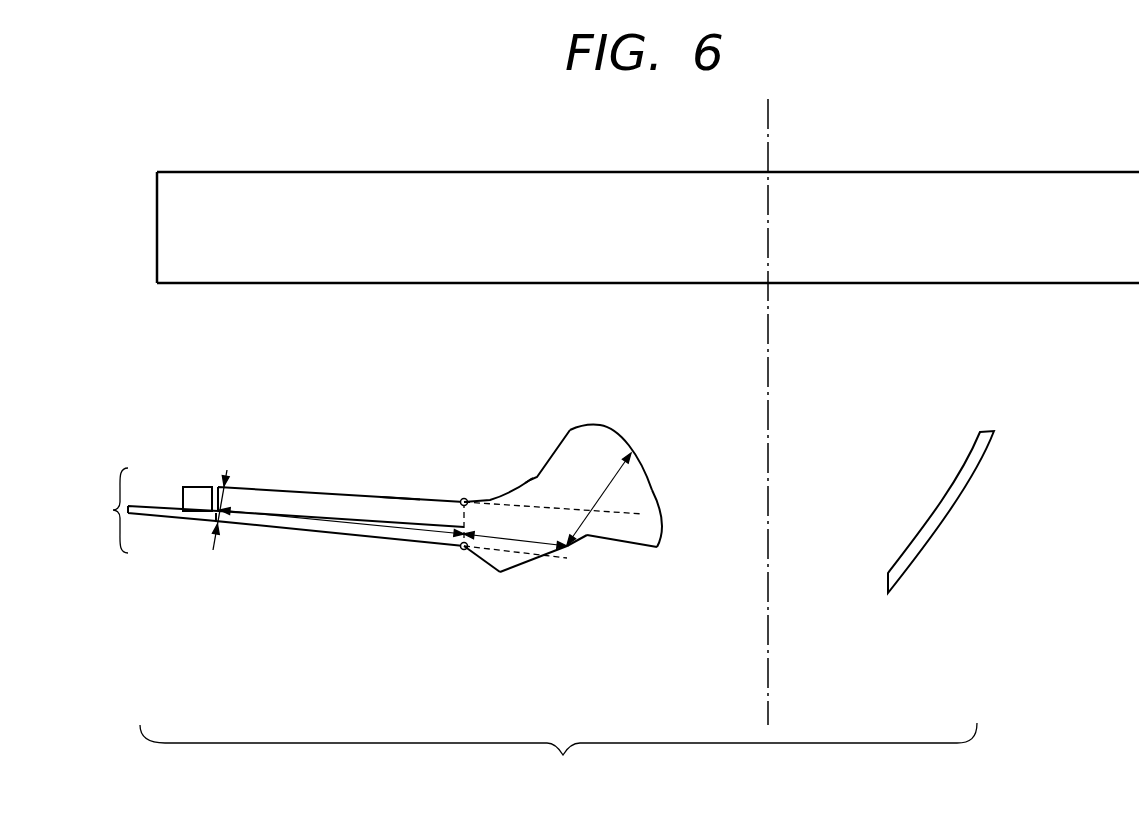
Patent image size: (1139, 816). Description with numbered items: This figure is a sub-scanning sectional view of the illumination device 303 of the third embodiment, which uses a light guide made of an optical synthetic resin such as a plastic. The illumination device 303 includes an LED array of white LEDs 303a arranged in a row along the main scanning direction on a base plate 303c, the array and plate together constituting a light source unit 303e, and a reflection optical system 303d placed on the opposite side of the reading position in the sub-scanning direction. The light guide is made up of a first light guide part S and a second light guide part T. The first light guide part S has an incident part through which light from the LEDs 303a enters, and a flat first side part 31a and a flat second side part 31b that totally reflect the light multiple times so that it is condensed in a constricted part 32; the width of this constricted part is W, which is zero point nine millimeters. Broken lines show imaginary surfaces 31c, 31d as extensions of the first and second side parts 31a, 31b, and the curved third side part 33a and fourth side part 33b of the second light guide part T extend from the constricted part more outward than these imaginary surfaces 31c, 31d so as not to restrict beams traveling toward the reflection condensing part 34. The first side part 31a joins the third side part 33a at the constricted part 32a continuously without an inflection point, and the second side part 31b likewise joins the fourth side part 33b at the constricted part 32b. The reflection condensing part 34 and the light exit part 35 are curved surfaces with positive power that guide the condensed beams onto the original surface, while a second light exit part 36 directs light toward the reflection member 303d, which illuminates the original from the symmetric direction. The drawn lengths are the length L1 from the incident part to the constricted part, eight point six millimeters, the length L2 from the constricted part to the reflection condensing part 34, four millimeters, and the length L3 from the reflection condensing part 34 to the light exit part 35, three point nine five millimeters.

The illumination device 303 is at (558, 755).
The white LED 303a is at (197, 496).
The base plate 303c is at (180, 520).
The reflection optical system 303d is at (975, 458).
The light source unit 303e is at (92, 510).
The first side part 31a is at (330, 490).
The second side part 31b is at (325, 531).
The imaginary surface 31c is at (625, 515).
The imaginary surface 31d is at (557, 560).
The constricted part 32 is at (453, 494).
The constricted part 32a is at (464, 498).
The constricted part 32b is at (462, 550).
The third side part 33a is at (492, 500).
The fourth side part 33b is at (482, 560).
The reflection condensing part 34 is at (585, 550).
The light exit part 35 is at (628, 442).
The second light exit part 36 is at (625, 538).
The first light guide part S is at (400, 490).
The second light guide part T is at (533, 462).
The width of the constricted part W is at (233, 499).
The length from the incident part to the constricted part L1 is at (388, 528).
The length from the constricted part to the reflection condensing part L2 is at (522, 548).
The length from the reflection condensing part to the light exit part L3 is at (622, 489).